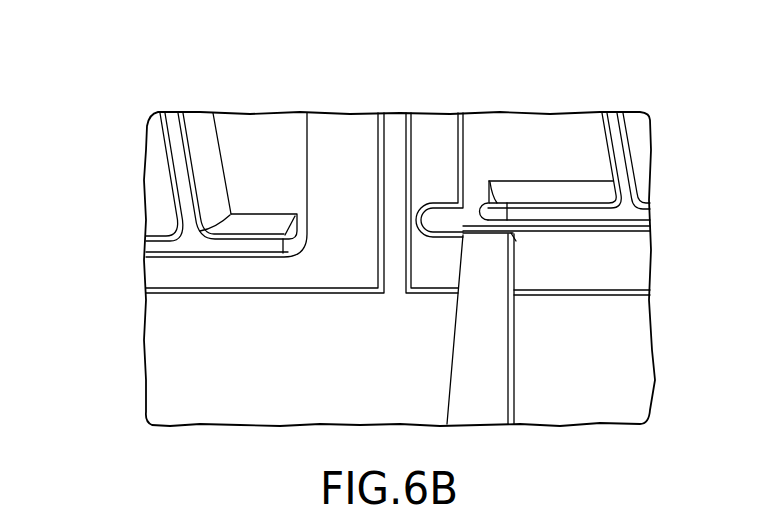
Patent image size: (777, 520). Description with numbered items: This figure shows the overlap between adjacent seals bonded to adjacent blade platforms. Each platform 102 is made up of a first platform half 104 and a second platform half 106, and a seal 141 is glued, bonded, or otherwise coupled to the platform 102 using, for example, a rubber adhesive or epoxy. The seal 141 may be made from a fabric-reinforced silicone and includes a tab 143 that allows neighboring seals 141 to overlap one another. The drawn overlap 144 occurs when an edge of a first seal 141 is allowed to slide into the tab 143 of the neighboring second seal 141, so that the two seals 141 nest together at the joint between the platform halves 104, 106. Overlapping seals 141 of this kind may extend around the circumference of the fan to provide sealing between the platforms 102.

The platform 102 is at (150, 187).
The first platform half 104 is at (538, 123).
The second platform half 106 is at (243, 120).
The seal 141 is at (295, 368).
The tab 143 is at (430, 240).
The overlap 144 is at (497, 269).